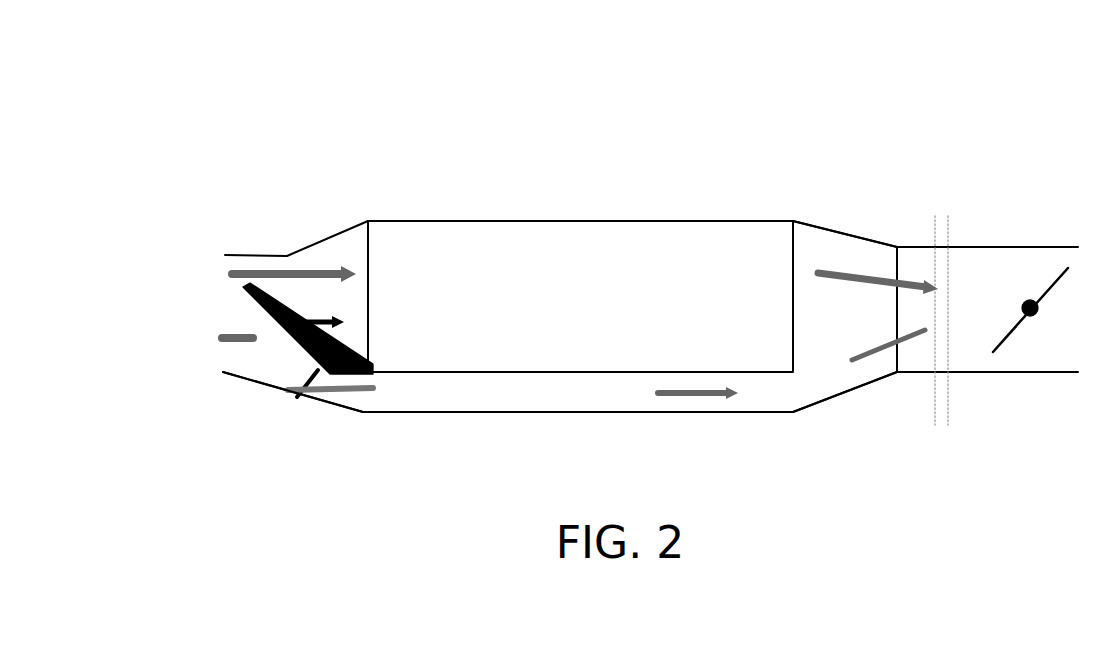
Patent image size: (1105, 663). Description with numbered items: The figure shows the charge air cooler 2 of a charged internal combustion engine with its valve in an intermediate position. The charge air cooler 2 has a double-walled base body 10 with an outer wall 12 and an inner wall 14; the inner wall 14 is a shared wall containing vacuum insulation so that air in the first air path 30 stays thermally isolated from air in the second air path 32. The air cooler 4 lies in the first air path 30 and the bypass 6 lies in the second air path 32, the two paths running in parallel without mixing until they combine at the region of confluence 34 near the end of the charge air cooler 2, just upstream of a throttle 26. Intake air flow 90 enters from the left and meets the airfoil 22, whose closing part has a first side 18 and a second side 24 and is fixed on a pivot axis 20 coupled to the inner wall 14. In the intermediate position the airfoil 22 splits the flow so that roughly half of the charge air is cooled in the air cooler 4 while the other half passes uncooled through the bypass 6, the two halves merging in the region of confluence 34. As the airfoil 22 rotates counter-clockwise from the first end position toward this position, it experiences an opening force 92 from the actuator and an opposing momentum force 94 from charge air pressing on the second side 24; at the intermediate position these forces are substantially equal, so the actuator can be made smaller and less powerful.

The charge air cooler 2 is at (918, 52).
The air cooler 4 is at (580, 267).
The bypass 6 is at (560, 425).
The base body 10 is at (845, 292).
The outer wall 12 is at (580, 192).
The inner wall 14 is at (468, 341).
The first side 18 is at (302, 297).
The pivot axis 20 is at (402, 337).
The airfoil 22 is at (275, 328).
The second side 24 is at (297, 348).
The throttle 26 is at (1045, 316).
The first air path 30 is at (575, 293).
The second air path 32 is at (649, 388).
The region of confluence 34 is at (852, 326).
The intake air flow 90 is at (271, 303).
The opening force 92 is at (324, 396).
The momentum force 94 is at (330, 323).